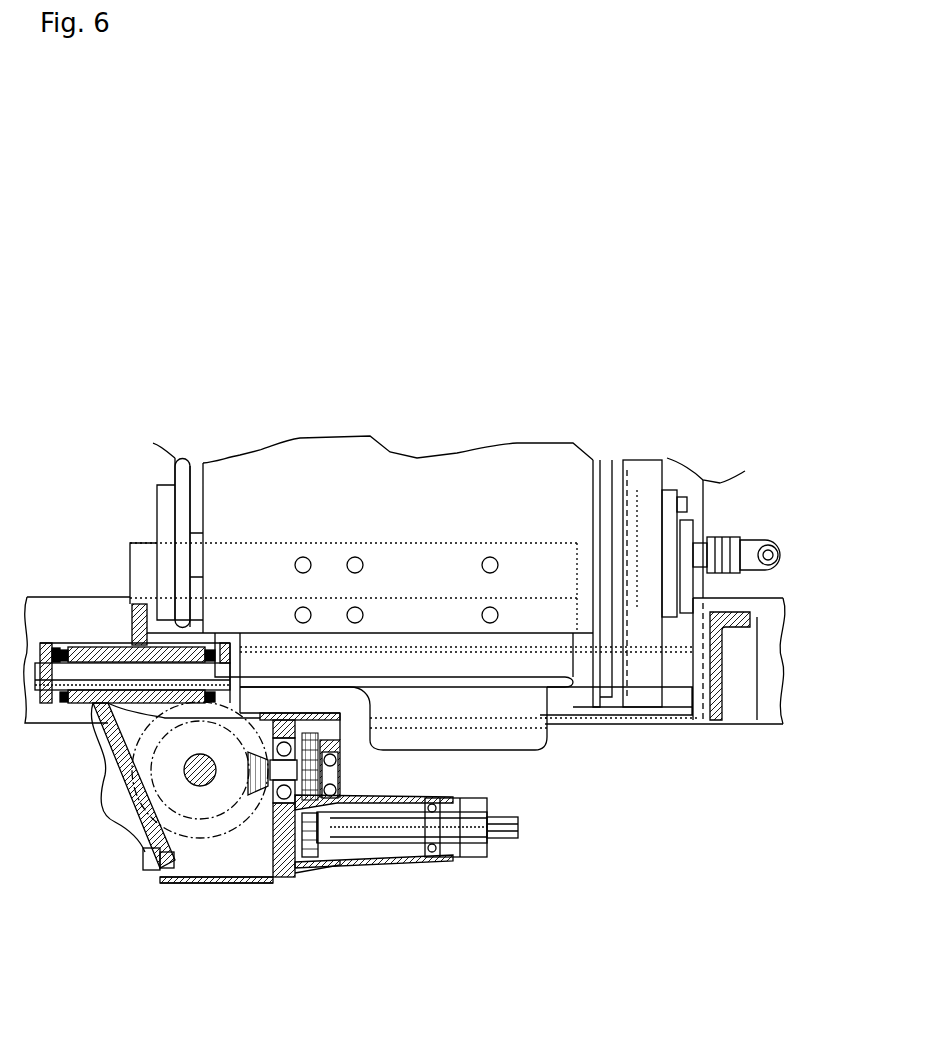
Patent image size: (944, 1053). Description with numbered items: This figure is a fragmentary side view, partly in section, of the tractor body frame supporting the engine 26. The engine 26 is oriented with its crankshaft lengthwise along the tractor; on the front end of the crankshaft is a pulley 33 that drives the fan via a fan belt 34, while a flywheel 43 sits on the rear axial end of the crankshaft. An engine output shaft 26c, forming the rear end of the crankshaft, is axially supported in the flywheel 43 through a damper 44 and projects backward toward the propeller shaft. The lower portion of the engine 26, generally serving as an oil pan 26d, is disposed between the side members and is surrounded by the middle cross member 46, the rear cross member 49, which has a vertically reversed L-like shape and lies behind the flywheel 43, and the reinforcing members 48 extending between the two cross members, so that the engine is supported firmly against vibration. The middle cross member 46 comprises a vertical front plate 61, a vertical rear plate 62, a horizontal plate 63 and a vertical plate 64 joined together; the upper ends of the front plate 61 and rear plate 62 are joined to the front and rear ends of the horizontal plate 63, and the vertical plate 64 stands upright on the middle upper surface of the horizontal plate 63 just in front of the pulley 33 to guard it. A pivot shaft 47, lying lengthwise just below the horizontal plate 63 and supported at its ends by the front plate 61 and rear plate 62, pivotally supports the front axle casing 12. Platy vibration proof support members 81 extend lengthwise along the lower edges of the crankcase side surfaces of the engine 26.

The front axle casing 12 is at (298, 877).
The engine 26 is at (342, 487).
The engine output shaft 26c is at (753, 538).
The oil pan 26d is at (487, 753).
The pulley 33 is at (155, 487).
The fan belt 34 is at (182, 462).
The flywheel 43 is at (642, 688).
The damper 44 is at (668, 547).
The middle cross member 46 is at (98, 622).
The pivot shaft 47 is at (95, 673).
The reinforcing members 48 is at (562, 702).
The rear cross member 49 is at (720, 695).
The vertical front plate 61 is at (50, 700).
The vertical rear plate 62 is at (223, 647).
The horizontal plate 63 is at (77, 645).
The vertical plate 64 is at (137, 603).
The vibration proof support members 81 is at (447, 543).